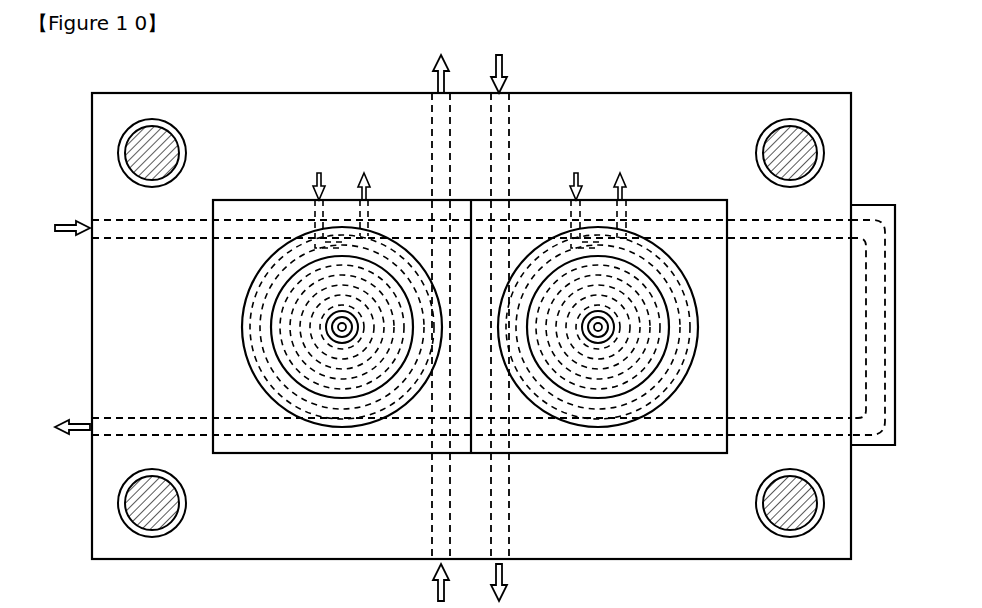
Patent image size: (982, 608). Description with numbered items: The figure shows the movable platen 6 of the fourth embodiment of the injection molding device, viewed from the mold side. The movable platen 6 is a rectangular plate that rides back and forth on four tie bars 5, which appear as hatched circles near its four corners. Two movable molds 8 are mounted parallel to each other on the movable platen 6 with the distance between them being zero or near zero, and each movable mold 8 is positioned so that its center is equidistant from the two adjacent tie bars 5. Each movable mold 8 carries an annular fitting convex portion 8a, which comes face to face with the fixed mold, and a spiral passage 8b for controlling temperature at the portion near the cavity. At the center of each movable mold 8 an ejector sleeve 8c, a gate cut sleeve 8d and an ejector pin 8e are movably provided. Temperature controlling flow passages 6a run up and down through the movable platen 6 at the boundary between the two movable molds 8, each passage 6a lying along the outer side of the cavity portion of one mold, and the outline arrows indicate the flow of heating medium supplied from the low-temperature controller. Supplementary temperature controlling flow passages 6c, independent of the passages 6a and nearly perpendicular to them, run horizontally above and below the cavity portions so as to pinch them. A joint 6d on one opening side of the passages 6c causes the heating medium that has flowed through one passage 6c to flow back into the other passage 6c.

The tie bar 5 is at (148, 158).
The movable platen 6 is at (295, 108).
The temperature controlling flow passage 6a is at (433, 136).
The supplementary temperature controlling flow passage 6c is at (127, 226).
The joint 6d is at (876, 217).
The movable mold 8 is at (251, 213).
The annular fitting convex portion 8a is at (242, 327).
The spiral passage 8b is at (266, 280).
The ejector sleeve 8c is at (331, 341).
The gate cut sleeve 8d is at (345, 331).
The ejector pin 8e is at (339, 337).